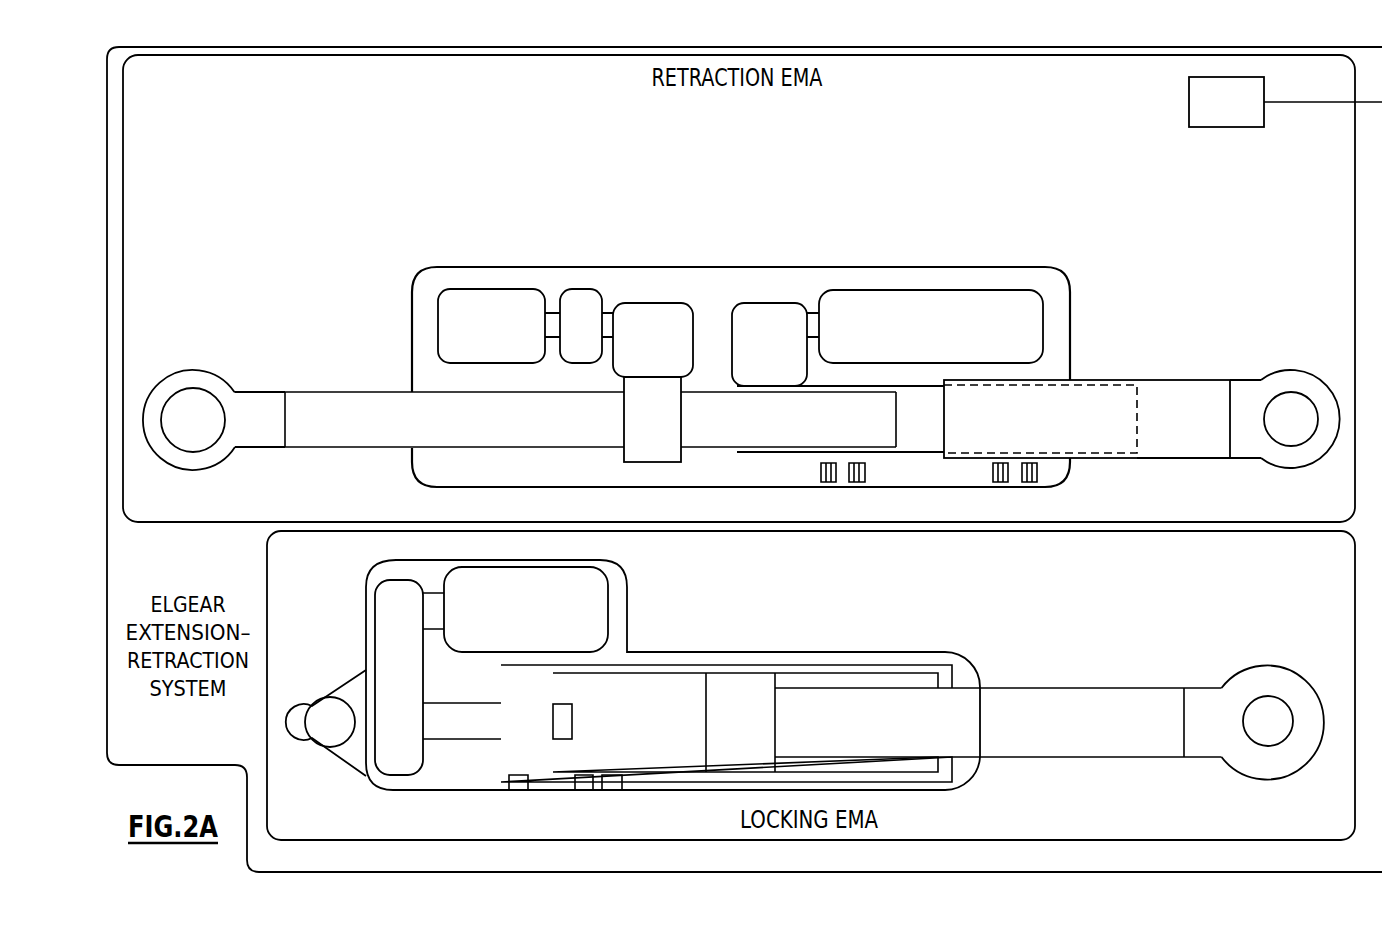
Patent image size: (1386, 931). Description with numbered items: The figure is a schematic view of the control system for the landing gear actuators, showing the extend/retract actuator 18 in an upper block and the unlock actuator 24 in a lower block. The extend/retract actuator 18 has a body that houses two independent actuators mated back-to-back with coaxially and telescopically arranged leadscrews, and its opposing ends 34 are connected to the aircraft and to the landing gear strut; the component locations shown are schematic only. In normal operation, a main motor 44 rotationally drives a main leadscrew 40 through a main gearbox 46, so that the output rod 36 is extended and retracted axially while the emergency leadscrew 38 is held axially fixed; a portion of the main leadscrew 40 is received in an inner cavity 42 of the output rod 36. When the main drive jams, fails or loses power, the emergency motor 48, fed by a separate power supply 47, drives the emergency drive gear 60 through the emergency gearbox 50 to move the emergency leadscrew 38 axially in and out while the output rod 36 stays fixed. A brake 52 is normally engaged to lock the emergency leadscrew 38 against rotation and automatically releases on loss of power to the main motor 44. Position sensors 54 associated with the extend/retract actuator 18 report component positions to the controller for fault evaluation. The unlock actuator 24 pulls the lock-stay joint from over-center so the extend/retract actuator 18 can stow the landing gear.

The extend/retract actuator 18 is at (1078, 312).
The unlock actuator 24 is at (962, 645).
The opposing ends 34 is at (192, 397).
The output rod 36 is at (1157, 393).
The emergency leadscrew 38 is at (575, 441).
The main leadscrew 40 is at (917, 455).
The inner cavity 42 is at (1185, 456).
The main motor 44 is at (929, 290).
The main gearbox 46 is at (752, 303).
The power supply 47 is at (1238, 127).
The emergency motor 48 is at (472, 289).
The emergency gearbox 50 is at (653, 303).
The brake 52 is at (561, 289).
The position sensors 54 is at (1030, 505).
The emergency drive gear 60 is at (660, 455).